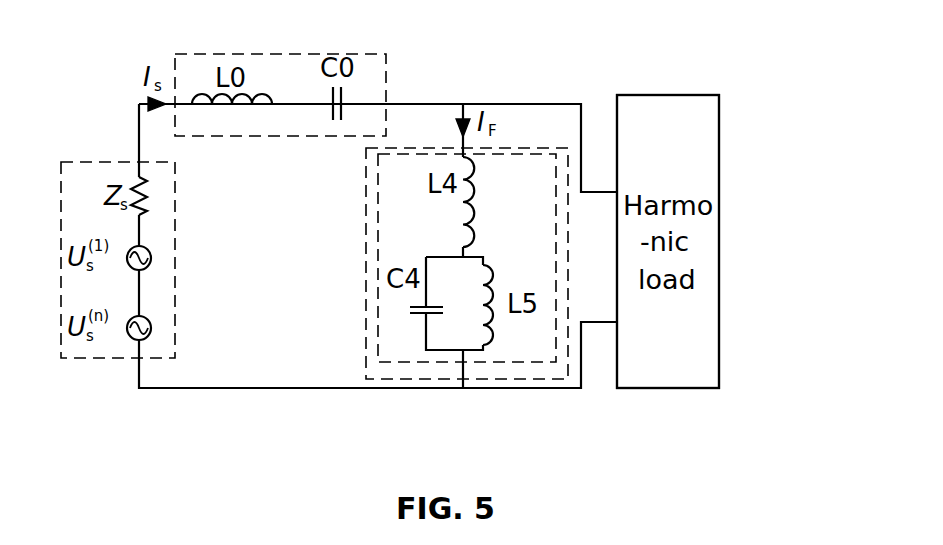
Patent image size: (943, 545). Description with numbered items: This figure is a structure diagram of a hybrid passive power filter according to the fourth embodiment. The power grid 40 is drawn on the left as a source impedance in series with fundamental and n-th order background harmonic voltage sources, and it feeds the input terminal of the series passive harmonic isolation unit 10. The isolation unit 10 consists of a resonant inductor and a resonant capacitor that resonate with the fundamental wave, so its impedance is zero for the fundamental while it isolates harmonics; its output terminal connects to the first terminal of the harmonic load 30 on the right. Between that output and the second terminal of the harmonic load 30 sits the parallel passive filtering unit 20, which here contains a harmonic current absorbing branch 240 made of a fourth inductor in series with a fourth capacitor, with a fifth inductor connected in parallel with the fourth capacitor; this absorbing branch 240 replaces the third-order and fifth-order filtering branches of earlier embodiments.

The series passive harmonic isolation unit 10 is at (386, 58).
The parallel passive filtering unit 20 is at (470, 382).
The harmonic current absorbing branch 240 is at (375, 182).
The harmonic load 30 is at (719, 170).
The power grid 40 is at (175, 260).